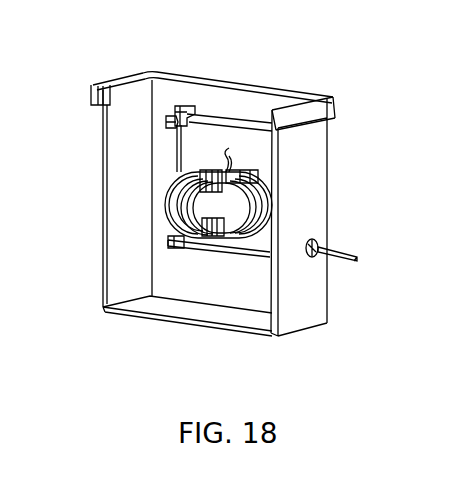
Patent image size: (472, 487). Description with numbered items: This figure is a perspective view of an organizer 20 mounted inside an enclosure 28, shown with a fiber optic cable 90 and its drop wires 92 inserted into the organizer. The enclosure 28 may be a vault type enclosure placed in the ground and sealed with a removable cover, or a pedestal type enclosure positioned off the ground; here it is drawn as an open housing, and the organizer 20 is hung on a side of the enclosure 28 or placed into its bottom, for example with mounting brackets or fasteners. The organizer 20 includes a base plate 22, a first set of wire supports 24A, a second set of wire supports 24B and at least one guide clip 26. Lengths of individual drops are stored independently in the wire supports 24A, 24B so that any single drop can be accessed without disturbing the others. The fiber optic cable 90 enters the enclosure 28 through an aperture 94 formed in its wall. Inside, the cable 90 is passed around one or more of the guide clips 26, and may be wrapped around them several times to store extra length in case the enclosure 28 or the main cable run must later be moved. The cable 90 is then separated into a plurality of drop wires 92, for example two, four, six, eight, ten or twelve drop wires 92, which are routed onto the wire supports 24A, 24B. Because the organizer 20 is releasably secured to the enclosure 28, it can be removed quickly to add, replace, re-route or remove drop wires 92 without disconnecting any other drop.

The organizer 20 is at (217, 252).
The base plate 22 is at (188, 110).
The first set of wire supports 24A is at (168, 200).
The second set of wire supports 24B is at (233, 190).
The guide clip 26 is at (168, 122).
The enclosure 28 is at (112, 313).
The fiber optic cable 90 is at (347, 253).
The drop wires 92 is at (226, 170).
The aperture 94 is at (318, 243).